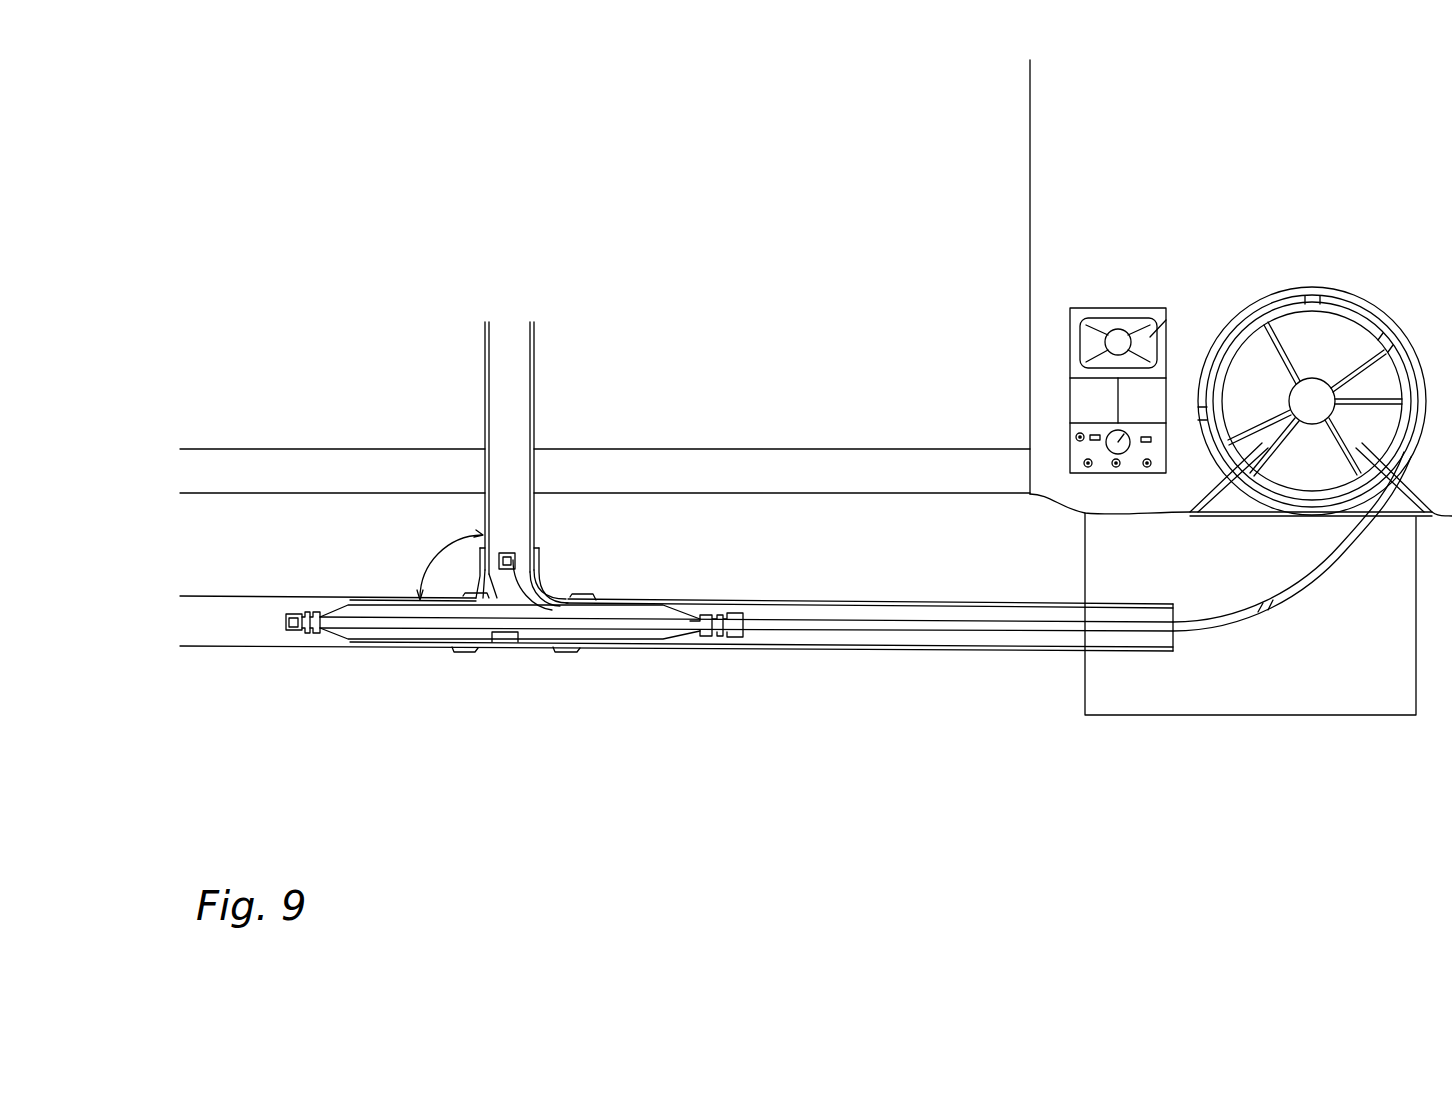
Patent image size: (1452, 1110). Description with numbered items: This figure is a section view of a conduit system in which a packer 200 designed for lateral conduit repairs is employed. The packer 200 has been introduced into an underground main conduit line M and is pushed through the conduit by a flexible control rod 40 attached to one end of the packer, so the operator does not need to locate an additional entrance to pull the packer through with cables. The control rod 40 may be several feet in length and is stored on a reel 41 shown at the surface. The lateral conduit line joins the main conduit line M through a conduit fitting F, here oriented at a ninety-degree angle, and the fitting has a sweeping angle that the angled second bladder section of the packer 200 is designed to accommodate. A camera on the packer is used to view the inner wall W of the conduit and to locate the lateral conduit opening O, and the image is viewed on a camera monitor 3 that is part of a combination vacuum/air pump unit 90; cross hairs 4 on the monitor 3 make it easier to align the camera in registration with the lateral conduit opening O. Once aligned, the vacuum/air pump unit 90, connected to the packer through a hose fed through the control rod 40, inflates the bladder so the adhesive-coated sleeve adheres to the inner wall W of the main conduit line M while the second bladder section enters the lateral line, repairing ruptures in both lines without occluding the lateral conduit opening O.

The vertical pipe / conduit C is at (512, 381).
The conduit fitting F is at (531, 600).
The inner wall W is at (250, 599).
The main conduit line M is at (864, 612).
The packer 200 is at (623, 612).
The control rod 40 is at (926, 630).
The vacuum/air pump unit 90 is at (1134, 265).
The cross hairs 4 is at (1089, 310).
The lateral conduit opening O is at (1106, 342).
The camera monitor 3 is at (1166, 320).
The reel 41 is at (1313, 390).